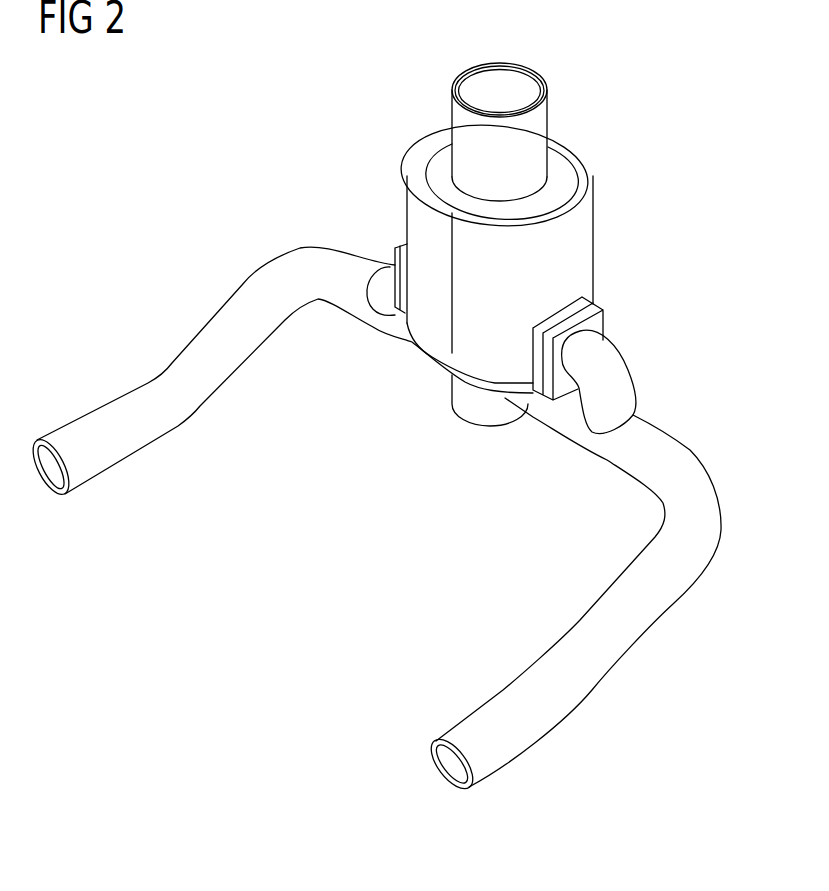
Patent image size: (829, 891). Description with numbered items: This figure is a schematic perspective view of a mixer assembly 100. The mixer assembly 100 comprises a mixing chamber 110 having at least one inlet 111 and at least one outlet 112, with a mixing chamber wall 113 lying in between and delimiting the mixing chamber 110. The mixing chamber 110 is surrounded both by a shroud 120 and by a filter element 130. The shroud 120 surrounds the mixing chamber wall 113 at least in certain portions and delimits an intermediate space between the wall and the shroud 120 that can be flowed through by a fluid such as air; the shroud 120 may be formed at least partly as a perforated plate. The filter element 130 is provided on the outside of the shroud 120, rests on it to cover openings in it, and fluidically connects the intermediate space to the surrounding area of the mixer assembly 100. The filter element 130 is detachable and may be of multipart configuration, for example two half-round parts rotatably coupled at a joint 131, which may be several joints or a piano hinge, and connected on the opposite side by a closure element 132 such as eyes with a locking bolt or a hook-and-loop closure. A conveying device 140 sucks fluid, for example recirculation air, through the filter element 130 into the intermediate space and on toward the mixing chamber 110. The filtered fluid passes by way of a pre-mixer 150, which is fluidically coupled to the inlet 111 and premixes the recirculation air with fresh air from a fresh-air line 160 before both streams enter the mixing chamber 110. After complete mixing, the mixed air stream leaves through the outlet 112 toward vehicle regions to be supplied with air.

The mixer assembly 100 is at (735, 678).
The mixing chamber 110 is at (569, 122).
The inlet 111 is at (482, 408).
The outlet 112 is at (458, 74).
The mixing chamber wall 113 is at (442, 152).
The shroud 120 is at (557, 192).
The filter element 130 is at (568, 253).
The joint 131 is at (560, 147).
The closure element 132 is at (438, 333).
The conveying device 140 is at (393, 257).
The pre-mixer 150 is at (365, 290).
The fresh-air line 160 is at (117, 445).